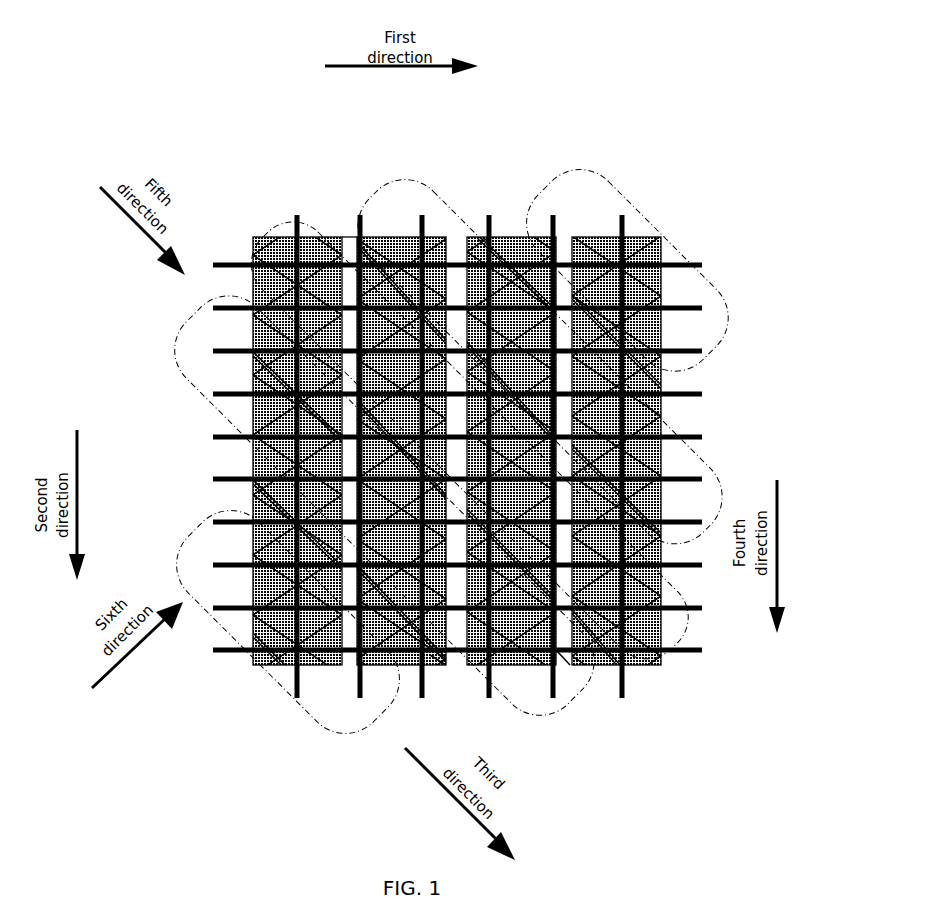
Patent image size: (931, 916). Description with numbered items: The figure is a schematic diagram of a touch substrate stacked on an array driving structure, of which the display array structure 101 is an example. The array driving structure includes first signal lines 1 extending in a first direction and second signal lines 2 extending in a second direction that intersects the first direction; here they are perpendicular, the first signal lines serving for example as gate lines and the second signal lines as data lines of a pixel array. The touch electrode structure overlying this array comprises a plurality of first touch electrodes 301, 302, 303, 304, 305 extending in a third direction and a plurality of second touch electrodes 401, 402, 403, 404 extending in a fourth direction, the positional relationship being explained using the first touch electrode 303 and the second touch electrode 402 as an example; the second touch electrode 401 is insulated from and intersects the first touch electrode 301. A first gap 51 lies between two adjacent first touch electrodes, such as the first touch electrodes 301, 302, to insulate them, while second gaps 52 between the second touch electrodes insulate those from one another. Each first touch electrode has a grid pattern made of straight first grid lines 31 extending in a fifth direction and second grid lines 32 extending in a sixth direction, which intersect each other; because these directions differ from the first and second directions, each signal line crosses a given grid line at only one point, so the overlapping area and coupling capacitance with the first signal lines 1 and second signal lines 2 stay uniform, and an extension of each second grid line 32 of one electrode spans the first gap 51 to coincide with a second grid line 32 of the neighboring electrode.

The first signal lines 1 is at (683, 350).
The second signal lines 2 is at (297, 695).
The first grid lines 31 is at (253, 383).
The second grid lines 32 is at (253, 413).
The first gap 51 is at (440, 668).
The second gaps 52 is at (565, 660).
The display array structure 101 is at (348, 242).
The first touch electrode 301 is at (195, 520).
The first touch electrode 302 is at (178, 317).
The first touch electrode 303 is at (255, 222).
The first touch electrode 304 is at (372, 178).
The first touch electrode 305 is at (535, 187).
The second touch electrode 401 is at (216, 498).
The second touch electrode 402 is at (383, 665).
The second touch electrode 403 is at (535, 665).
The second touch electrode 404 is at (645, 665).